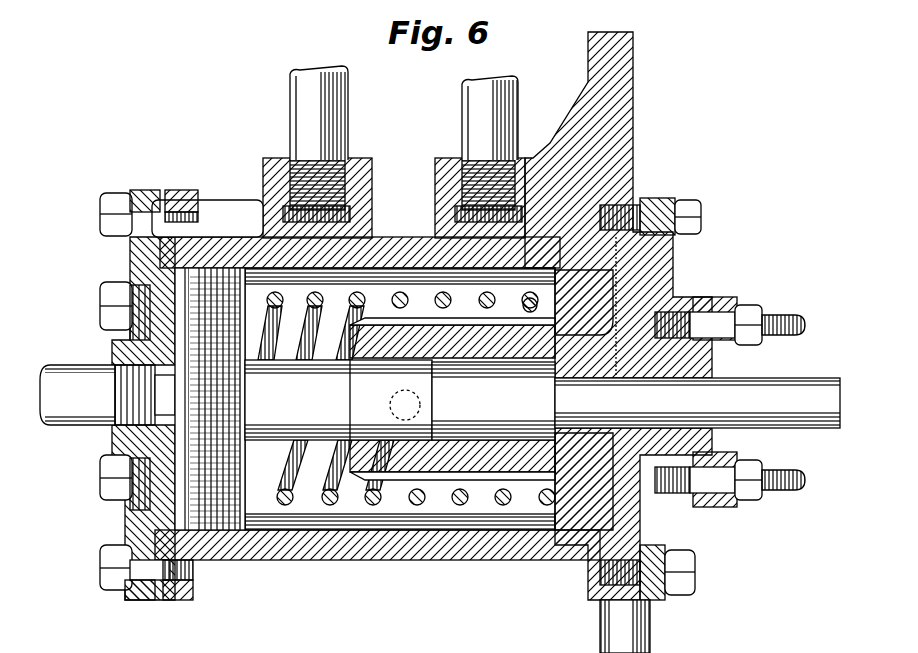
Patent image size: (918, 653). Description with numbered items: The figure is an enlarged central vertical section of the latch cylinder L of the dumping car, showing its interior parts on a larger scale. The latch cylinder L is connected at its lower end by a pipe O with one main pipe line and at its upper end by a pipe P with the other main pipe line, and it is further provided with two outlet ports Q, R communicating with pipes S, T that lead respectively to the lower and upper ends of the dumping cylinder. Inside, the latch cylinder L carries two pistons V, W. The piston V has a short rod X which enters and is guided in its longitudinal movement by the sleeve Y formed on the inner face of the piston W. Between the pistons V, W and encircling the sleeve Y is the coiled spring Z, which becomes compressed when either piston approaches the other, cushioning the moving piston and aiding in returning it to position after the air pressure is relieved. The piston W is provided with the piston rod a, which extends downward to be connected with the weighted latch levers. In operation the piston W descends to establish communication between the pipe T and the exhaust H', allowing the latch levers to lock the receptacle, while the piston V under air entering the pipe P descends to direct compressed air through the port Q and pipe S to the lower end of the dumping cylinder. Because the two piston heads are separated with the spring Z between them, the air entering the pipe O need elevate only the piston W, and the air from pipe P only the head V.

The latch cylinder L is at (181, 201).
The pipe S is at (345, 112).
The pipe T is at (518, 108).
The outlet port Q is at (268, 222).
The outlet port R is at (455, 222).
The pipe P is at (107, 385).
The piston V is at (210, 399).
The coiled spring Z is at (406, 398).
The short rod X is at (400, 400).
The exhaust H' is at (400, 400).
The sleeve Y is at (452, 399).
The piston W is at (568, 400).
The piston rod a is at (697, 396).
The pipe O is at (611, 626).